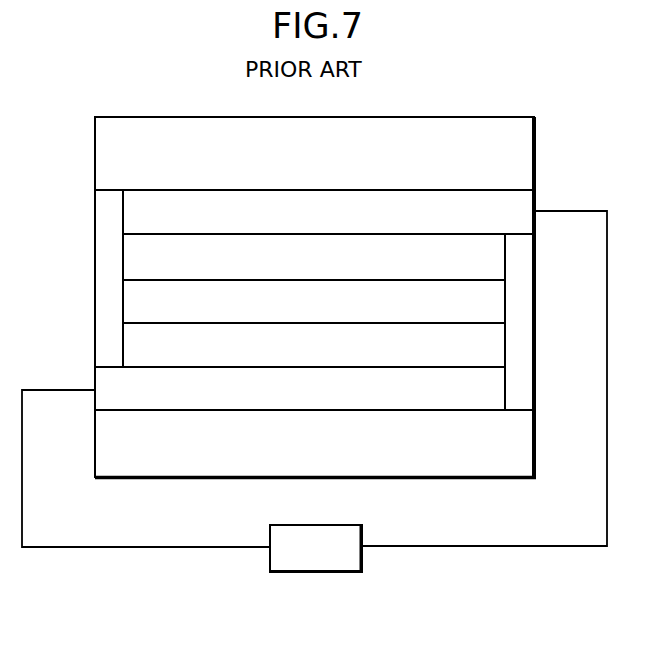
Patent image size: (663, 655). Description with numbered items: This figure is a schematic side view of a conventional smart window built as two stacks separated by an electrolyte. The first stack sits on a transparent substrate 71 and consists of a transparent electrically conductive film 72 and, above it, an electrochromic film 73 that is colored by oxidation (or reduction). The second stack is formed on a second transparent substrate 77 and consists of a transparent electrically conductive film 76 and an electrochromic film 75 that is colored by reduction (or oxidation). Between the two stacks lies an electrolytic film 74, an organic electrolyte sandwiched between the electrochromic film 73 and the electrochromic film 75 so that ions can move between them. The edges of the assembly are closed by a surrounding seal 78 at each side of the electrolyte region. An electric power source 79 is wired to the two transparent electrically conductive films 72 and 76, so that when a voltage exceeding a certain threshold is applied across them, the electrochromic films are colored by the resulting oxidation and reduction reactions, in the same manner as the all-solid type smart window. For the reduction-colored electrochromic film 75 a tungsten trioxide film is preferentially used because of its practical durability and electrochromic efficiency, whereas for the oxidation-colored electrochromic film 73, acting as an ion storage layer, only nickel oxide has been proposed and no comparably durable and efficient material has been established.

The transparent substrate 71 is at (505, 452).
The transparent electrically conductive film 72 is at (452, 397).
The electrochromic film colored by oxidation 73 is at (462, 343).
The electrolytic film 74 is at (472, 305).
The electrochromic film colored by reduction 75 is at (493, 265).
The transparent electrically conductive film 76 is at (490, 217).
The transparent substrate 77 is at (518, 154).
The seal 78 is at (106, 245).
The electric power source 79 is at (338, 563).